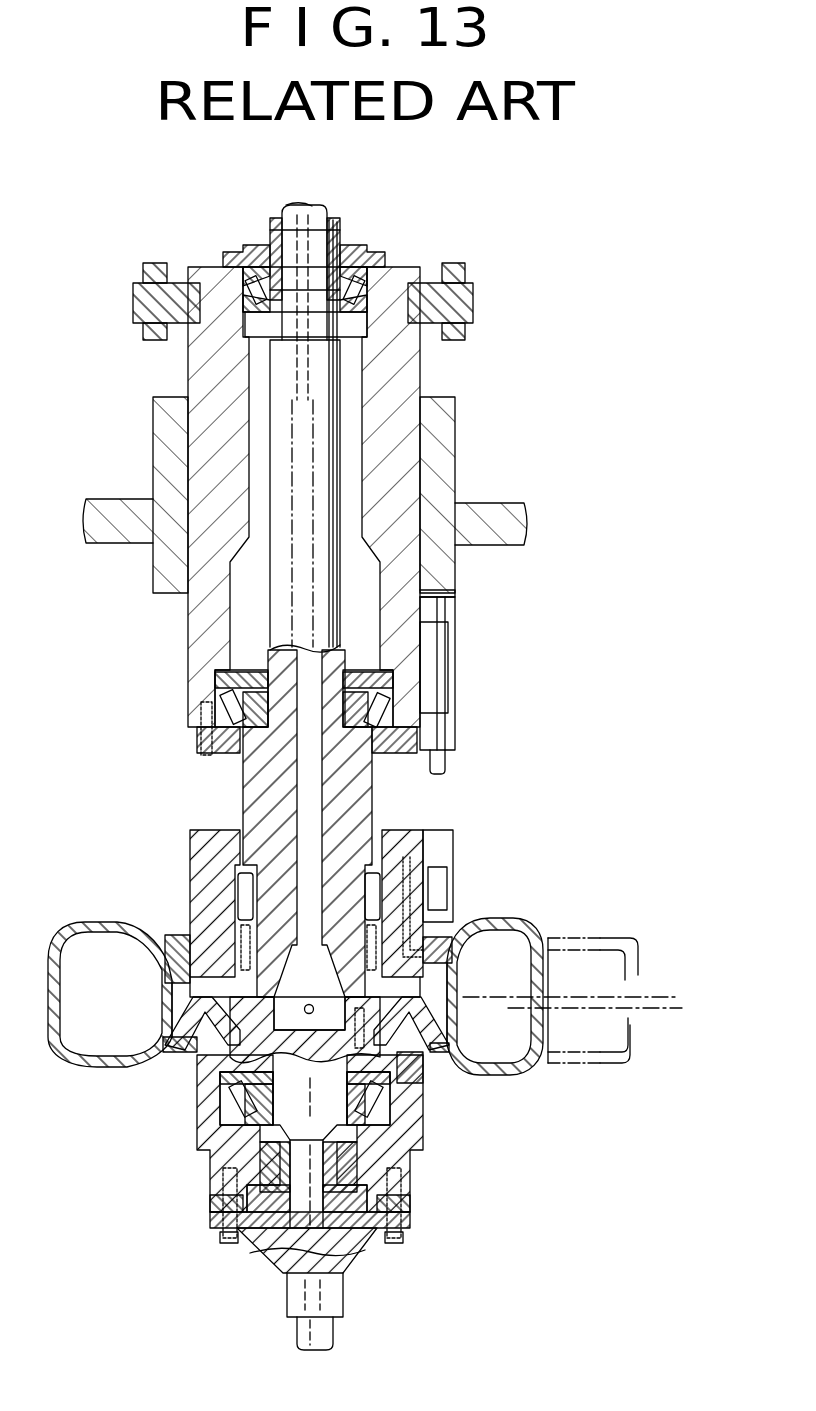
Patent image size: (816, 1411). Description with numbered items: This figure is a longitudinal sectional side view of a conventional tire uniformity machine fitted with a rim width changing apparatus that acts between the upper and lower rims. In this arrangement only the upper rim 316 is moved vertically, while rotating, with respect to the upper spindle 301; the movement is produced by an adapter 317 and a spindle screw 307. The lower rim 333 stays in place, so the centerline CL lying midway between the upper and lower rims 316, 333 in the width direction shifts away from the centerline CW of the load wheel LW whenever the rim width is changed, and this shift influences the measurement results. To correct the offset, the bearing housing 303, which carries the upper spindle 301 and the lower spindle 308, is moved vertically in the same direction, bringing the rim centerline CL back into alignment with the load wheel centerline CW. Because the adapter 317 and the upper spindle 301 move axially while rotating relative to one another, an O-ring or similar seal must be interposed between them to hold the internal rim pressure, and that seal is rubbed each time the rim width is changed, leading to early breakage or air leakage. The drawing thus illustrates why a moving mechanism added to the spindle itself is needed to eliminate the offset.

The upper spindle 301 is at (277, 460).
The bearing housing 303 is at (193, 645).
The spindle screw 307 is at (374, 800).
The adapter 317 is at (404, 830).
The upper rim 316 is at (442, 942).
The lower rim 333 is at (440, 1052).
The lower spindle 308 is at (303, 1187).
The centerline between upper and lower rims CL is at (667, 990).
The centerline of load wheel CW is at (657, 1010).
The load wheel LW is at (567, 1063).